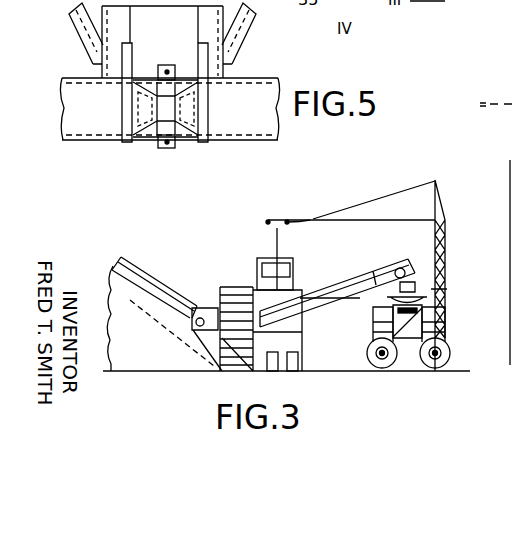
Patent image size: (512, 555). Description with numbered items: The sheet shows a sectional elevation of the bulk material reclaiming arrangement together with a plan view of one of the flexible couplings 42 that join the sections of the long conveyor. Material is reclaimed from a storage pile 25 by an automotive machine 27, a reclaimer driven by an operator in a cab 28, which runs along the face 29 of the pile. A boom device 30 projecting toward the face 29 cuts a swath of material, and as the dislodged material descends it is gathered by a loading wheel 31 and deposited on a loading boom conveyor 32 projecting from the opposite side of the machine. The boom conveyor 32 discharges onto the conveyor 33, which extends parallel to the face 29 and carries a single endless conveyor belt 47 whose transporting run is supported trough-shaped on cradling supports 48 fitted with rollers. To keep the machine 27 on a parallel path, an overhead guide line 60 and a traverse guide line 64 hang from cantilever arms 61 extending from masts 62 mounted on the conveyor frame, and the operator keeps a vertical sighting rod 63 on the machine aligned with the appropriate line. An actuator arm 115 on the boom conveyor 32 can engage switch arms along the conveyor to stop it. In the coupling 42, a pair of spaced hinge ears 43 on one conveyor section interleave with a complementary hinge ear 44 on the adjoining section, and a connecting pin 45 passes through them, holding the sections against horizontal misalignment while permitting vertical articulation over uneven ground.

In FIG. 3, the storage pile 25 is at (121, 284).
In FIG. 3, the automotive machine 27 is at (322, 275).
In FIG. 3, the cab 28 is at (261, 282).
In FIG. 3, the face 29 is at (143, 284).
In FIG. 3, the boom device 30 is at (170, 287).
In FIG. 3, the loading wheel 31 is at (228, 295).
In FIG. 3, the loading boom conveyor 32 is at (353, 297).
In FIG. 3, the conveyor 33 is at (458, 317).
In FIG. 5, the flexible coupling 42 is at (128, 157).
In FIG. 5, the hinge ears 43 is at (168, 124).
In FIG. 5, the complementary hinge ear 44 is at (162, 107).
In FIG. 5, the connecting pin 45 is at (176, 147).
In FIG. 3, the endless conveyor belt 47 is at (423, 298).
In FIG. 3, the cradling supports 48 is at (443, 297).
In FIG. 3, the overhead guide line 60 is at (268, 221).
In FIG. 3, the cantilever arms 61 is at (397, 213).
In FIG. 3, the masts 62 is at (443, 232).
In FIG. 3, the sighting rod 63 is at (279, 250).
In FIG. 3, the traverse guide line 64 is at (310, 220).
In FIG. 3, the actuator arm 115 is at (357, 298).